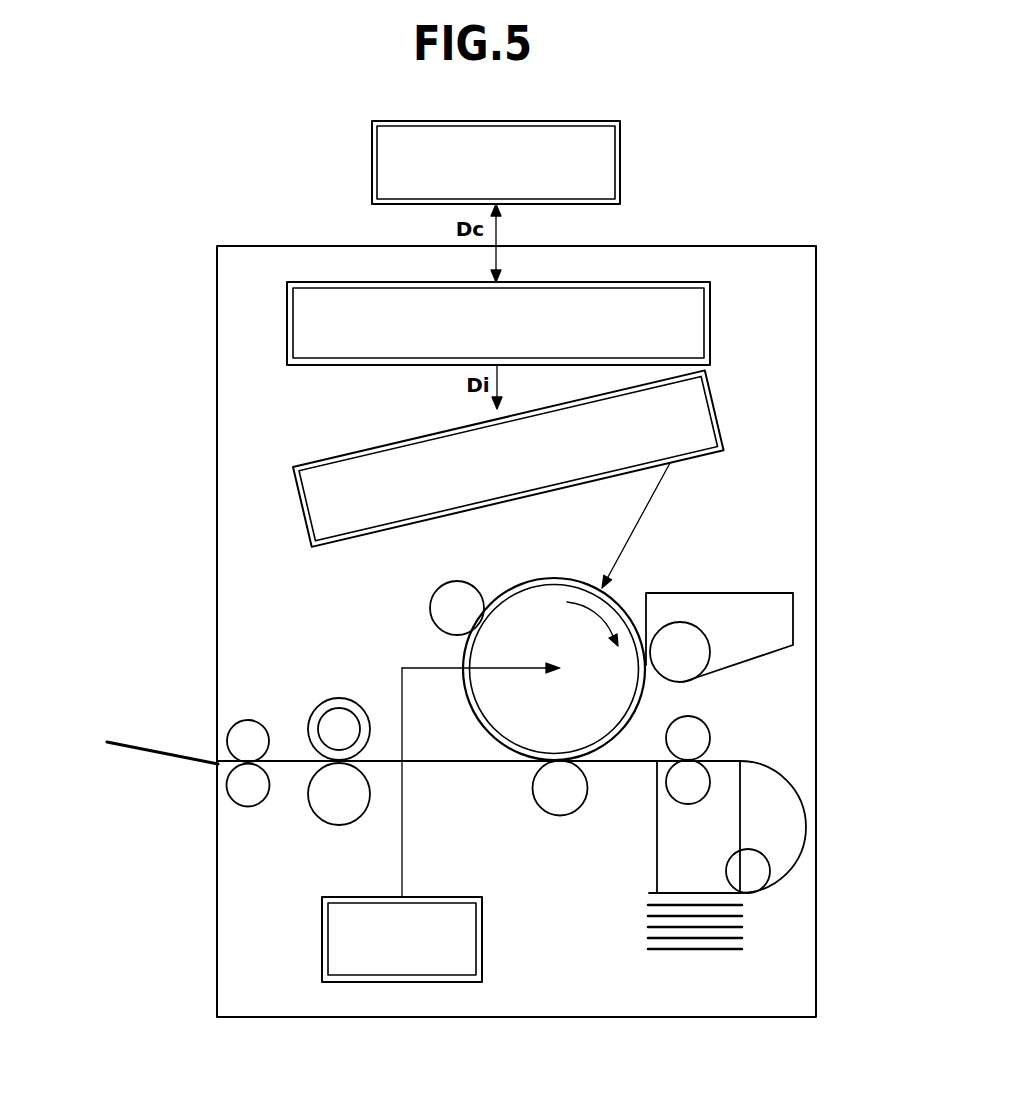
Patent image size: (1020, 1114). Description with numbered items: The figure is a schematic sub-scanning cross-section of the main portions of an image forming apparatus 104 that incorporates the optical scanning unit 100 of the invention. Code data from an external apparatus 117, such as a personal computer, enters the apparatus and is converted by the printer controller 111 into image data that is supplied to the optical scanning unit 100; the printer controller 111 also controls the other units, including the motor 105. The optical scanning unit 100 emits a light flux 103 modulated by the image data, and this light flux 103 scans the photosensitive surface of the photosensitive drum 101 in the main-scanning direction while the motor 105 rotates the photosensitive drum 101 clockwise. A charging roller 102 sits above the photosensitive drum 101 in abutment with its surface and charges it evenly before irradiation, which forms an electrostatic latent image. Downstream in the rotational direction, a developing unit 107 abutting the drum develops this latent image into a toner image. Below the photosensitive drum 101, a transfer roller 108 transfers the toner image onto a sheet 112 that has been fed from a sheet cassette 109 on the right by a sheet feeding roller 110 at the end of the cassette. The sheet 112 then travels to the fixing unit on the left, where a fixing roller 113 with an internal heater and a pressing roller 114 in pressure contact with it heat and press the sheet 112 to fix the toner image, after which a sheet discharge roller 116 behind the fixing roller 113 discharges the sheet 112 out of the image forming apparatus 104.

The image forming apparatus 104 is at (759, 210).
The external apparatus 117 is at (622, 160).
The printer controller 111 is at (710, 320).
The optical scanning unit 100 is at (378, 447).
The light flux 103 is at (648, 512).
The photosensitive drum 101 is at (645, 692).
The charging roller 102 is at (430, 608).
The developing unit 107 is at (758, 593).
The motor 105 is at (322, 940).
The sheet 112 is at (450, 762).
The sheet discharge roller 116 is at (248, 720).
The fixing roller 113 is at (339, 698).
The pressing roller 114 is at (339, 825).
The transfer roller 108 is at (560, 815).
The sheet feeding roller 110 is at (735, 867).
The sheet cassette 109 is at (640, 922).